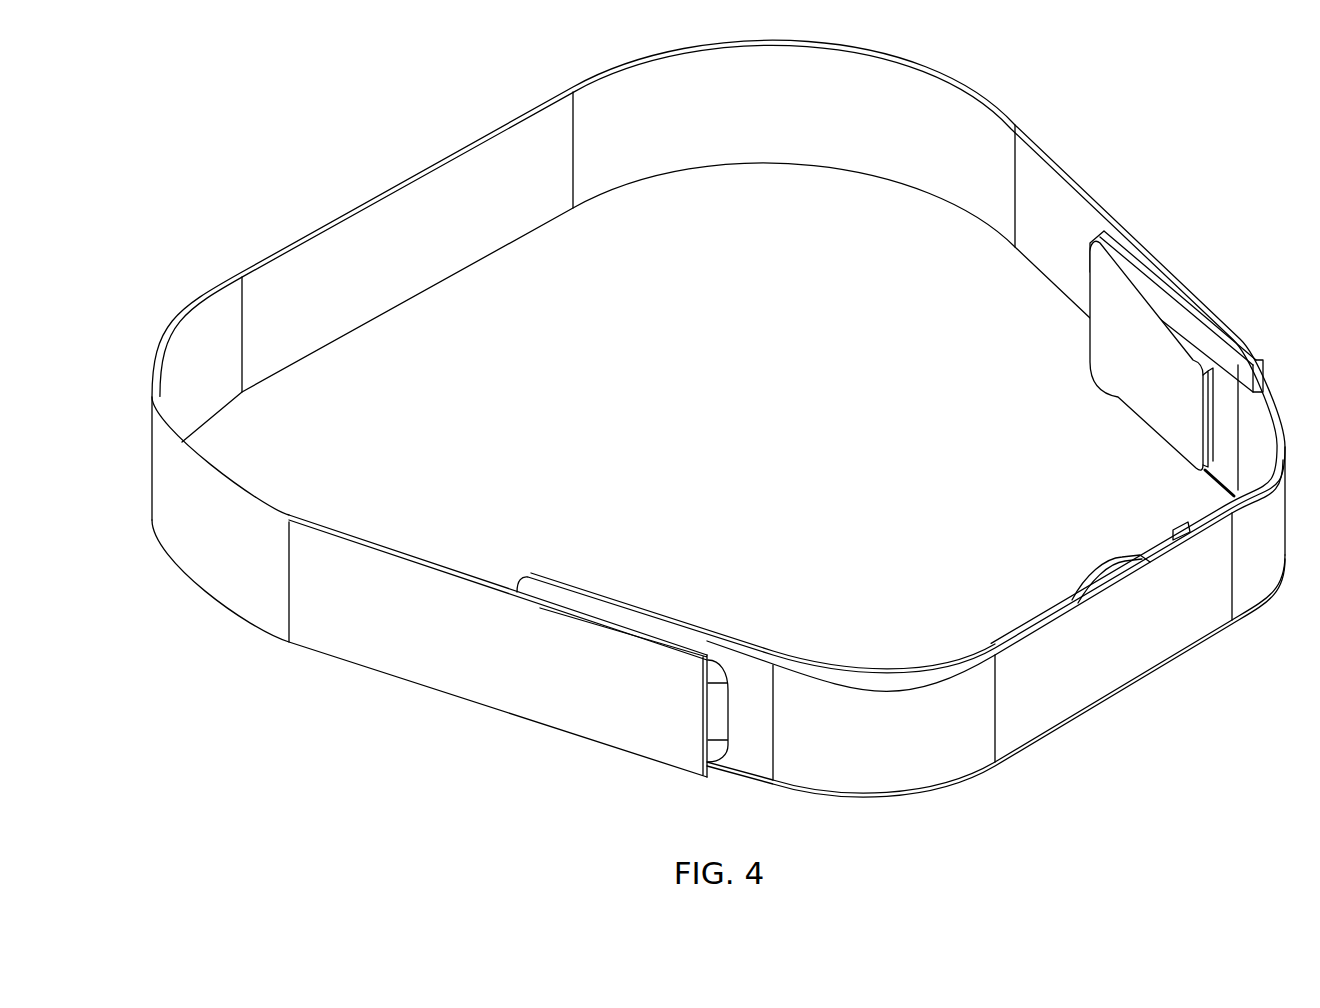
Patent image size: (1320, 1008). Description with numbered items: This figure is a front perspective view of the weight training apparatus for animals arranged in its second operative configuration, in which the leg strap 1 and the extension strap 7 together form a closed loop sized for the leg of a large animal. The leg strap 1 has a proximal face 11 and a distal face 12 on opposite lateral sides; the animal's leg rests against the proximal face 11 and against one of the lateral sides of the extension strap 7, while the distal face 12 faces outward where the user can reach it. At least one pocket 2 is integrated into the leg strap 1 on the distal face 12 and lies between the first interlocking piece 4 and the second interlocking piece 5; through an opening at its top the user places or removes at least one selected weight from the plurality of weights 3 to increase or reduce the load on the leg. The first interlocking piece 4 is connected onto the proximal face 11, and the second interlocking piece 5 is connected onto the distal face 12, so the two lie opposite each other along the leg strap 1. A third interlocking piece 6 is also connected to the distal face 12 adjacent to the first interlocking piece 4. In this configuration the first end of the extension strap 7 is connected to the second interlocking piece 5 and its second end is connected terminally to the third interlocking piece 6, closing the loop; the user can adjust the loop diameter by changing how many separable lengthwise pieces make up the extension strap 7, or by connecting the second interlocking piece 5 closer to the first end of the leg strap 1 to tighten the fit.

The leg strap 1 is at (1118, 681).
The pocket 2 is at (1165, 540).
The weights 3 is at (1107, 562).
The first interlocking piece 4 is at (1122, 386).
The second interlocking piece 5 is at (712, 712).
The third interlocking piece 6 is at (1190, 317).
The extension strap 7 is at (459, 258).
The proximal face 11 is at (1238, 446).
The distal face 12 is at (1121, 662).